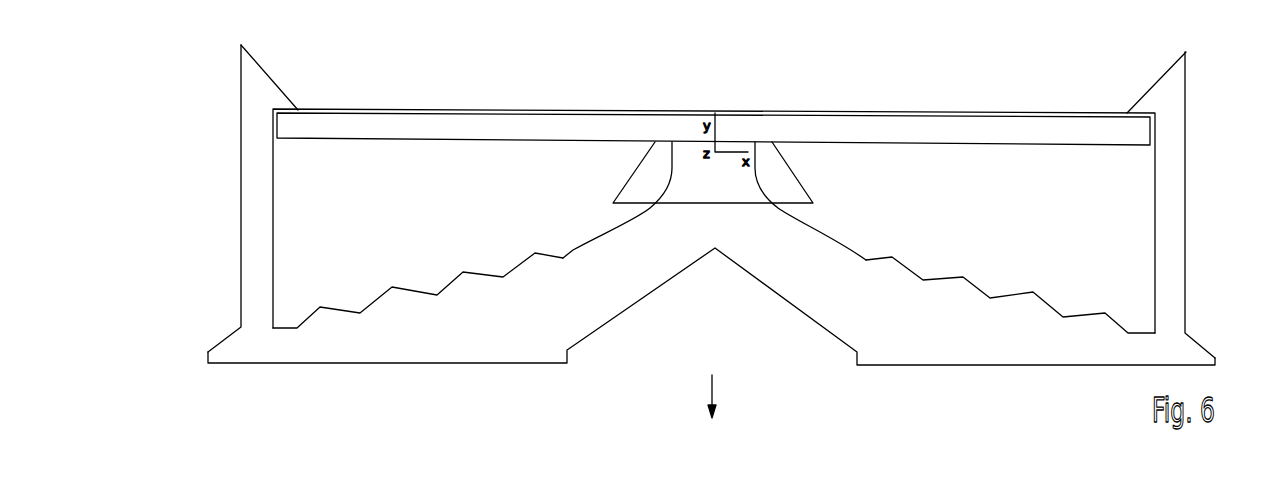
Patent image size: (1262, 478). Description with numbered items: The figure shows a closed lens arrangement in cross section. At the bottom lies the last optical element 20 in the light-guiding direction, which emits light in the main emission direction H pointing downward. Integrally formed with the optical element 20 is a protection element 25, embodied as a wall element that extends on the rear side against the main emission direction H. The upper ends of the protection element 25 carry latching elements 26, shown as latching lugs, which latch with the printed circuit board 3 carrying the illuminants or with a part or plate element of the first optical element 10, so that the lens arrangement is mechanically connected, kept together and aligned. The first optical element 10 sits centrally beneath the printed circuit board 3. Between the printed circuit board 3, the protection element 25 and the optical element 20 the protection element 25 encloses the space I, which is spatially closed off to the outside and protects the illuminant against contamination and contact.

The printed circuit board 3 is at (888, 127).
The first optical element 10 is at (790, 180).
The optical element 20 is at (407, 345).
The protection element 25 is at (252, 207).
The latching elements 26 is at (278, 97).
The space I is at (405, 205).
The main emission direction H is at (718, 392).